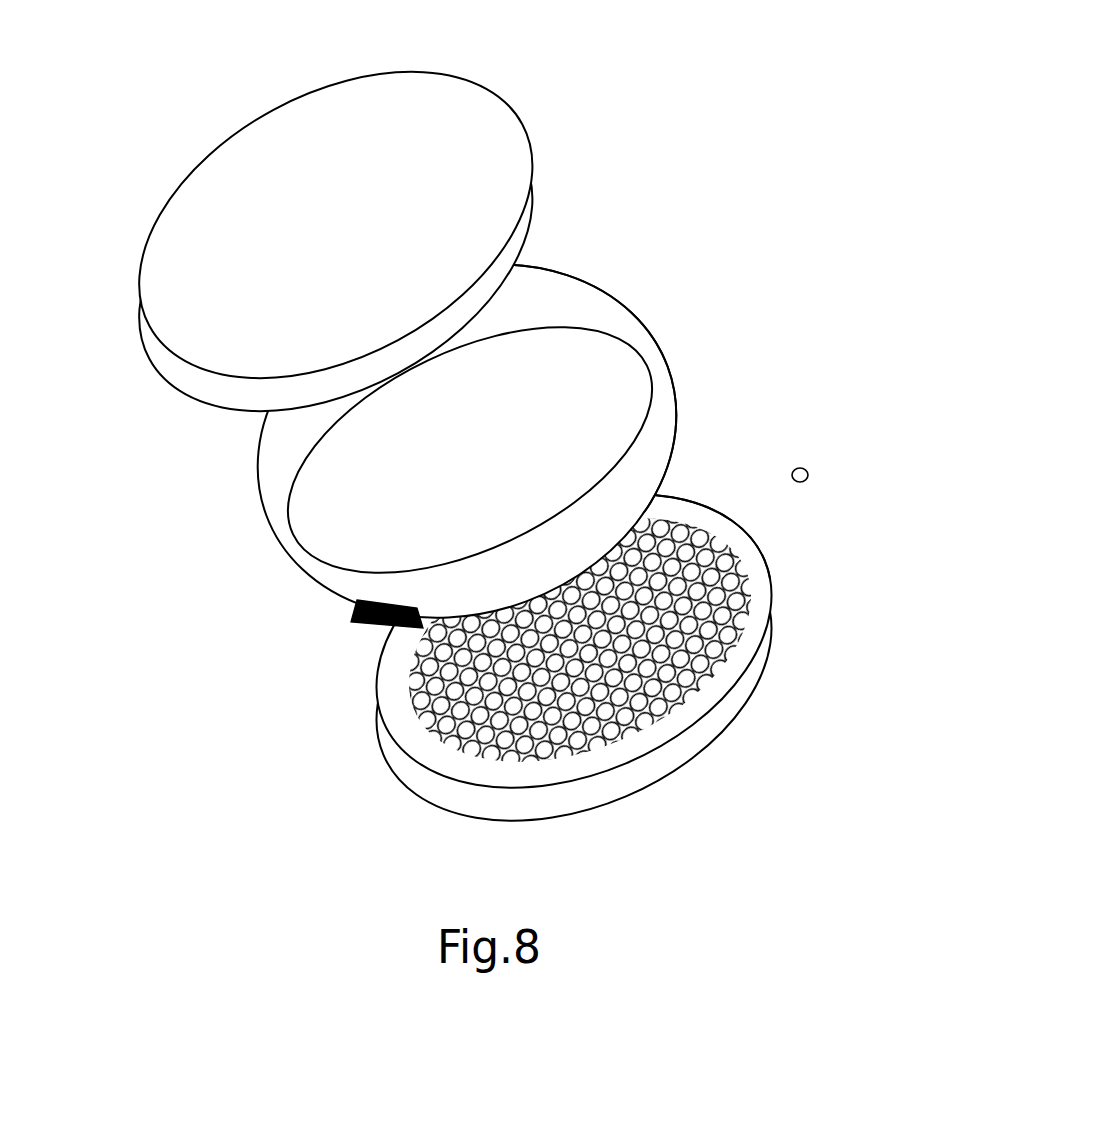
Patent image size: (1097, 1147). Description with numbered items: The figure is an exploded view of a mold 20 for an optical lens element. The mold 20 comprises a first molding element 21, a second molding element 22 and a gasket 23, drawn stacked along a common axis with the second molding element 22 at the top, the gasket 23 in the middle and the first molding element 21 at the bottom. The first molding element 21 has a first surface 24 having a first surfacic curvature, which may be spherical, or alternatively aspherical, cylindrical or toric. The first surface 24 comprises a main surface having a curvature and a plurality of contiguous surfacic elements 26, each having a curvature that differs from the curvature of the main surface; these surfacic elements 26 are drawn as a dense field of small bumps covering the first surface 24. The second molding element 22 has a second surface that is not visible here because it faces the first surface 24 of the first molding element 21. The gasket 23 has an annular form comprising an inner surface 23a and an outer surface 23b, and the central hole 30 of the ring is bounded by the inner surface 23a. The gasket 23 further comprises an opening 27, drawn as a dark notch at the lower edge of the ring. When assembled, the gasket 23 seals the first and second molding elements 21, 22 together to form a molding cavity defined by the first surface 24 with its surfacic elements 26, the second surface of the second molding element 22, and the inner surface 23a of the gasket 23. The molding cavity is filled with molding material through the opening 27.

The mold 20 is at (503, 443).
The first molding element 21 is at (760, 638).
The second molding element 22 is at (475, 150).
The gasket 23 is at (507, 436).
The inner surface 23a is at (655, 447).
The outer surface 23b is at (610, 318).
The first surface 24 is at (753, 602).
The surfacic elements 26 is at (668, 553).
The opening 27 is at (370, 622).
The central opening 30 is at (372, 512).